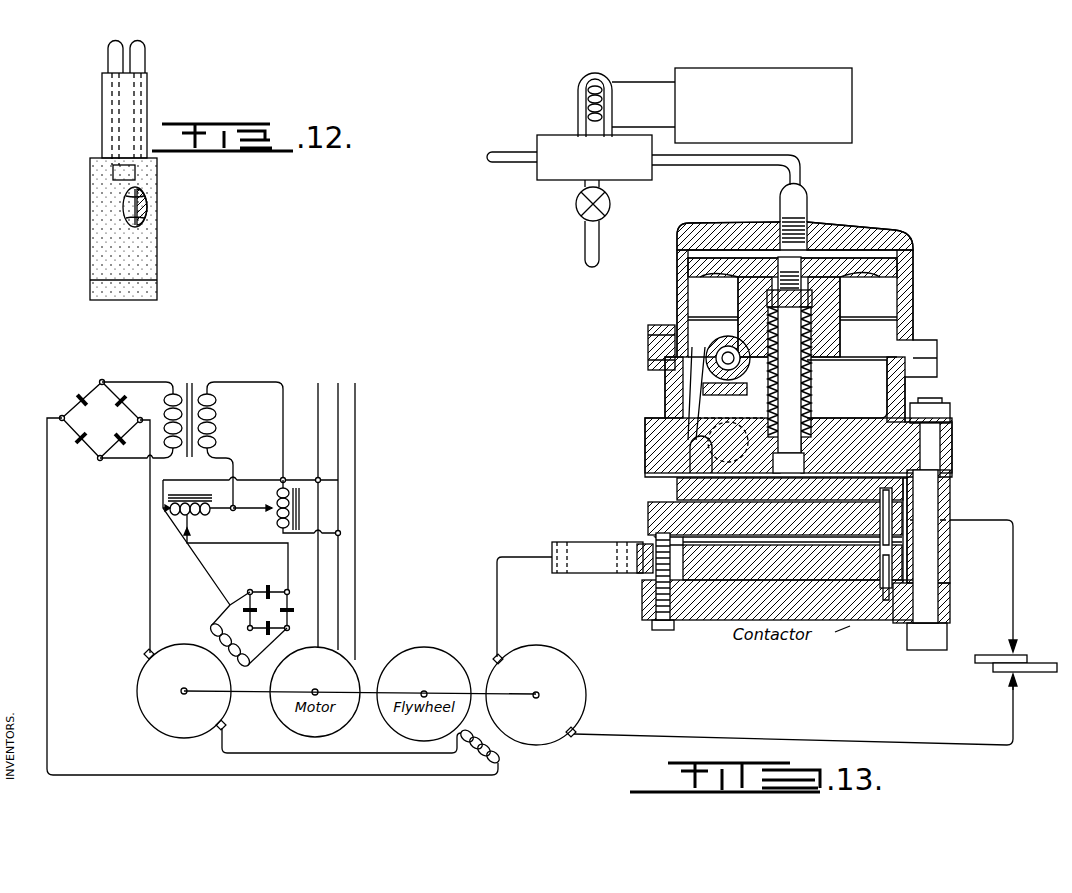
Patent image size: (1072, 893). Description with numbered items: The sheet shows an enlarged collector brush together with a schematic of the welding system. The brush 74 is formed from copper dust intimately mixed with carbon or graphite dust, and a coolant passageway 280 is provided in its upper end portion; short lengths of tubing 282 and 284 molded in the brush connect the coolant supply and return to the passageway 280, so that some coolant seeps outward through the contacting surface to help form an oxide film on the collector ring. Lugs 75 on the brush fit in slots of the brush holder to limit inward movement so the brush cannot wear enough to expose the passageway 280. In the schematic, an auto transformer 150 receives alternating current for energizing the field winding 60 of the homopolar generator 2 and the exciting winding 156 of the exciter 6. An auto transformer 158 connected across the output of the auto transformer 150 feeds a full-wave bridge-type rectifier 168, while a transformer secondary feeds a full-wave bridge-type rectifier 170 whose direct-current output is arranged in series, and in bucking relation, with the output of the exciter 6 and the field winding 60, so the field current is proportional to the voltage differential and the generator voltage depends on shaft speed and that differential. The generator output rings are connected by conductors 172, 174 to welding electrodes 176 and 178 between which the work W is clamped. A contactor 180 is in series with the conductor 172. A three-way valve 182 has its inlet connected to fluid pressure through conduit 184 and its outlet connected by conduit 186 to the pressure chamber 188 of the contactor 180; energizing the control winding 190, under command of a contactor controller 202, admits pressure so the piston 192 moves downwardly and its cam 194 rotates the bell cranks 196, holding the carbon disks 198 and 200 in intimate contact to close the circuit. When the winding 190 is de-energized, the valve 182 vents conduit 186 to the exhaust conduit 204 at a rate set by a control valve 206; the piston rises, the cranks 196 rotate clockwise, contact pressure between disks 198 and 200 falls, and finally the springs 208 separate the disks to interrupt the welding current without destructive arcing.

In FIG. 12, the tubing 284 is at (108, 55).
In FIG. 12, the tubing 282 is at (140, 63).
In FIG. 12, the lug 75 is at (113, 172).
In FIG. 12, the coolant passageway 280 is at (140, 210).
In FIG. 12, the brush 74 is at (152, 253).
In FIG. 13, the full-wave bridge-type rectifier 170 is at (104, 380).
In FIG. 13, the auto transformer 158 is at (197, 518).
In FIG. 13, the auto transformer 150 is at (285, 478).
In FIG. 13, the full-wave bridge-type rectifier 168 is at (248, 592).
In FIG. 13, the exciting winding 156 is at (212, 628).
In FIG. 13, the exciter 6 is at (138, 690).
In FIG. 13, the homopolar generator 2 is at (595, 693).
In FIG. 13, the field winding 60 is at (500, 762).
In FIG. 13, the conductor 172 is at (517, 535).
In FIG. 13, the conductor 174 is at (643, 735).
In FIG. 13, the welding electrode 176 is at (1011, 633).
In FIG. 13, the welding electrode 178 is at (1011, 684).
In FIG. 13, the work W is at (1030, 660).
In FIG. 13, the contactor controller 202 is at (852, 105).
In FIG. 13, the control winding 190 is at (578, 105).
In FIG. 13, the three-way valve 182 is at (553, 180).
In FIG. 13, the conduit 184 is at (530, 158).
In FIG. 13, the conduit 186 is at (800, 182).
In FIG. 13, the control valve 206 is at (608, 203).
In FIG. 13, the exhaust conduit 204 is at (600, 233).
In FIG. 13, the contactor 180 is at (913, 312).
In FIG. 13, the pressure chamber 188 is at (712, 243).
In FIG. 13, the piston 192 is at (683, 265).
In FIG. 13, the cam 194 is at (833, 335).
In FIG. 13, the bell crank 196 is at (705, 405).
In FIG. 13, the carbon disk 198 is at (650, 513).
In FIG. 13, the spring 208 is at (655, 538).
In FIG. 13, the carbon disk 200 is at (647, 587).